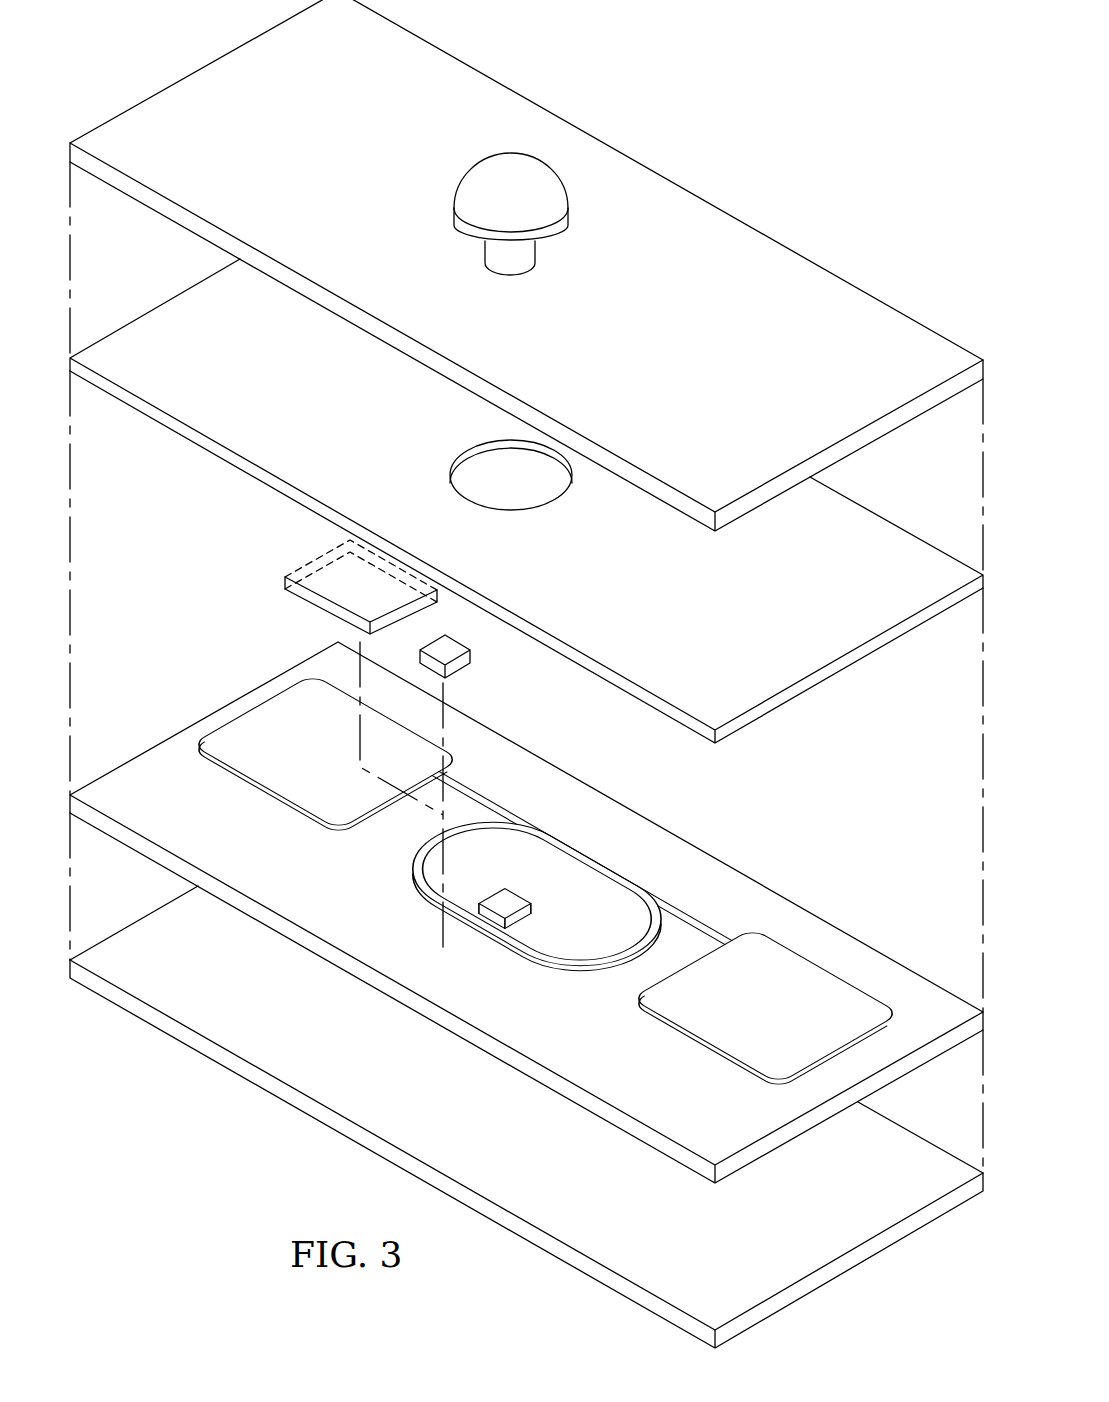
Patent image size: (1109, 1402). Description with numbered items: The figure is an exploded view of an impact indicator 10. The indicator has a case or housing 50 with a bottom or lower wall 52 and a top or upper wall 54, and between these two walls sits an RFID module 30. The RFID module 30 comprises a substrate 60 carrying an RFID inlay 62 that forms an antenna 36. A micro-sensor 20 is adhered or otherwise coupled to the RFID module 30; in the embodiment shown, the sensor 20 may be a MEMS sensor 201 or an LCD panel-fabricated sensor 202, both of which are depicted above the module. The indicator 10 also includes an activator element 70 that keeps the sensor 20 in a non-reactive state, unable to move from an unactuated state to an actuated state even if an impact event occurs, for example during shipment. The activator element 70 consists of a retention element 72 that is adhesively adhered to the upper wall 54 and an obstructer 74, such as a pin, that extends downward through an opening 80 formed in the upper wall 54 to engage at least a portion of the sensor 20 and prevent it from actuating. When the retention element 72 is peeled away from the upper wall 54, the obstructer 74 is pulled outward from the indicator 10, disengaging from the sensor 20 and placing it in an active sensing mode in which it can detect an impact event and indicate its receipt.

The impact indicator 10 is at (858, 70).
The micro-sensor 20 is at (293, 547).
The MEMS sensor 201 is at (470, 652).
The LCD panel-fabricated sensor 202 is at (288, 599).
The RFID module 30 is at (737, 800).
The antenna 36 is at (798, 972).
The housing 50 is at (336, 1144).
The lower wall 52 is at (848, 1272).
The upper wall 54 is at (163, 303).
The substrate 60 is at (912, 1072).
The RFID inlay 62 is at (706, 1056).
The activator element 70 is at (643, 156).
The retention element 72 is at (205, 62).
The obstructer 74 is at (453, 209).
The opening 80 is at (480, 503).